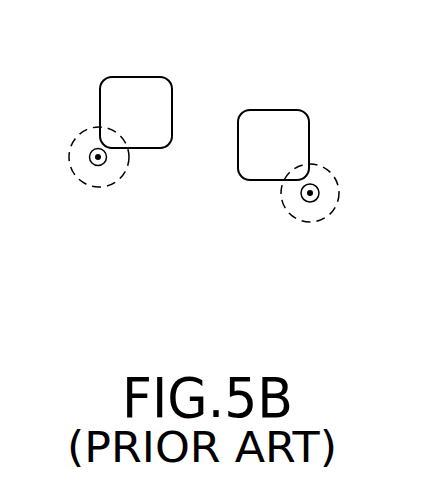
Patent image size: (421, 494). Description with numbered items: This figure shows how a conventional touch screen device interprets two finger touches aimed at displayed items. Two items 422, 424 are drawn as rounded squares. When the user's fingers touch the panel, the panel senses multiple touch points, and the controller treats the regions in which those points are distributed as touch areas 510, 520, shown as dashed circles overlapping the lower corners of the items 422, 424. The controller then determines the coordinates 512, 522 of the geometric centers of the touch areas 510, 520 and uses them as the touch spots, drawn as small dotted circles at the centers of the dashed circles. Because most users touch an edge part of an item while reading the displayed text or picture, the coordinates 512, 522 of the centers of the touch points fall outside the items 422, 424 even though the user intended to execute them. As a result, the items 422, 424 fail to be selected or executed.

The item 422 is at (133, 77).
The item 424 is at (272, 110).
The touch area 510 is at (83, 180).
The coordinates of geometric center 512 is at (105, 163).
The touch area 520 is at (298, 218).
The coordinates of geometric center 522 is at (318, 200).